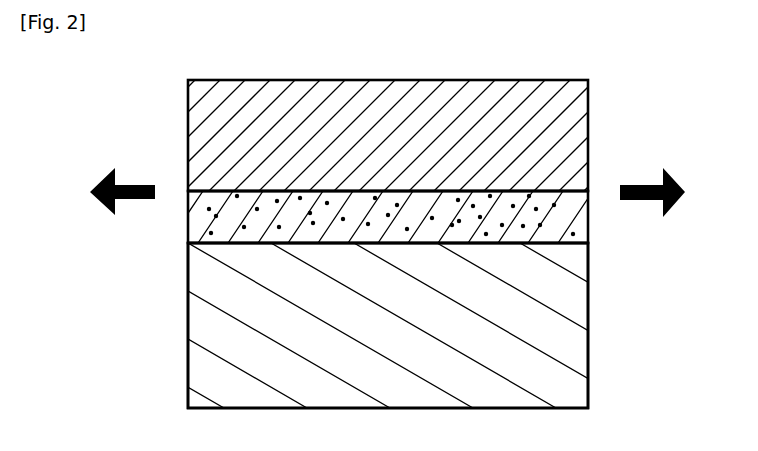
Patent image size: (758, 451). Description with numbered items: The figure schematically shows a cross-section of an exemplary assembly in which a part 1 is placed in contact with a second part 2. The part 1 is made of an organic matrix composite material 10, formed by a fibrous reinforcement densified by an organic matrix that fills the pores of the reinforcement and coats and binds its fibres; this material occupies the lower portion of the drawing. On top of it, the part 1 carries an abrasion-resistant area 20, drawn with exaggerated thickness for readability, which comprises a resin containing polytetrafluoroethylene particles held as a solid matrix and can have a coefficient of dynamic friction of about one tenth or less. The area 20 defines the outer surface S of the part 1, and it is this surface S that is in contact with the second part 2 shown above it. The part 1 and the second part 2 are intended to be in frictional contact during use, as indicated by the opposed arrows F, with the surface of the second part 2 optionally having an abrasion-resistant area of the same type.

The part 1 is at (140, 323).
The second part 2 is at (140, 114).
The organic matrix composite material 10 is at (208, 380).
The abrasion-resistant area 20 is at (583, 223).
The surface S is at (547, 190).
The arrows F is at (106, 204).